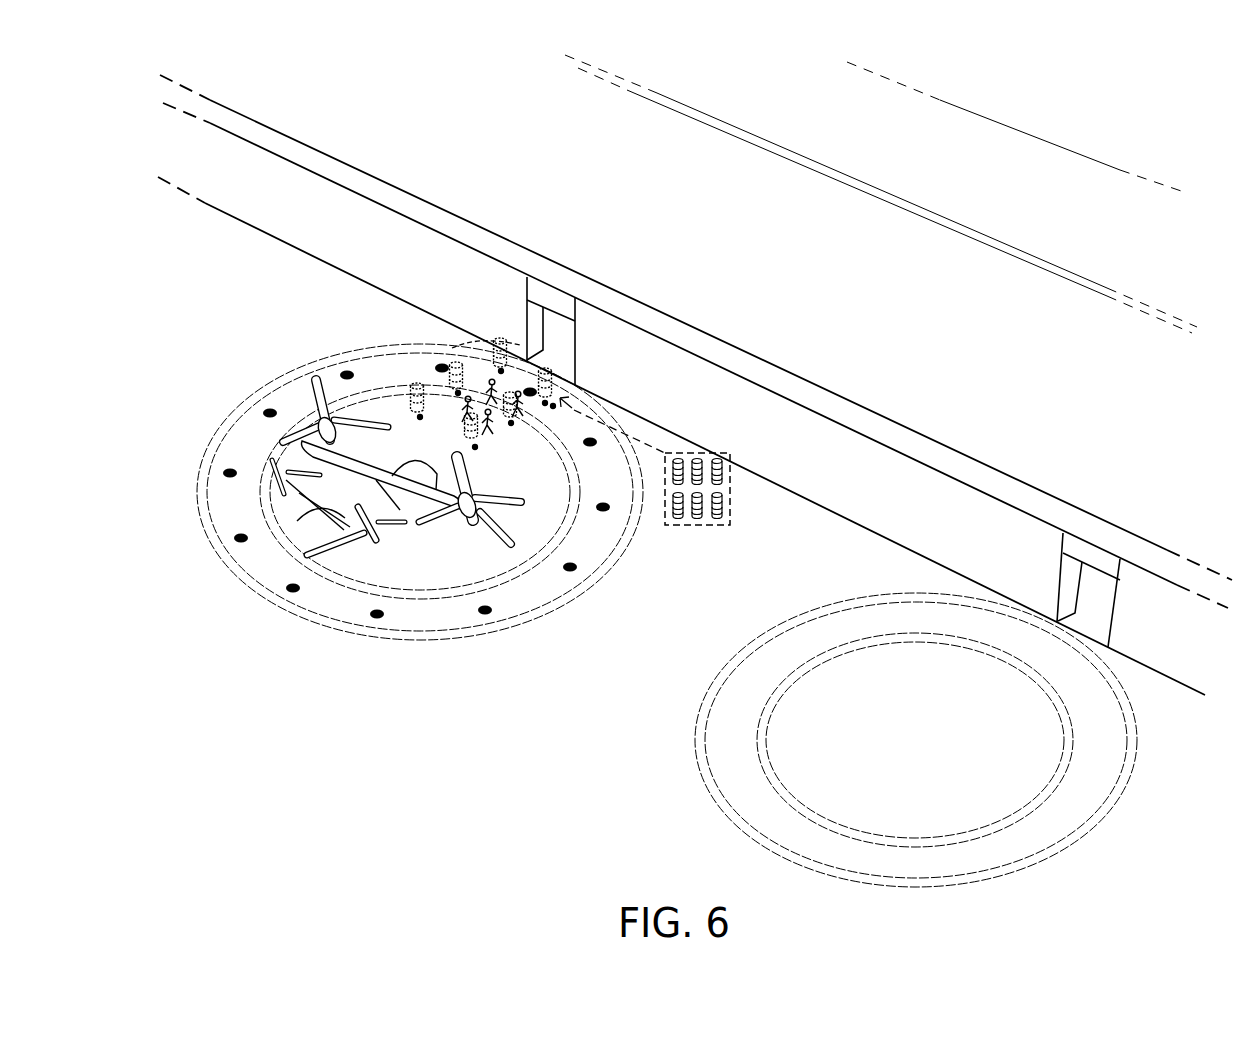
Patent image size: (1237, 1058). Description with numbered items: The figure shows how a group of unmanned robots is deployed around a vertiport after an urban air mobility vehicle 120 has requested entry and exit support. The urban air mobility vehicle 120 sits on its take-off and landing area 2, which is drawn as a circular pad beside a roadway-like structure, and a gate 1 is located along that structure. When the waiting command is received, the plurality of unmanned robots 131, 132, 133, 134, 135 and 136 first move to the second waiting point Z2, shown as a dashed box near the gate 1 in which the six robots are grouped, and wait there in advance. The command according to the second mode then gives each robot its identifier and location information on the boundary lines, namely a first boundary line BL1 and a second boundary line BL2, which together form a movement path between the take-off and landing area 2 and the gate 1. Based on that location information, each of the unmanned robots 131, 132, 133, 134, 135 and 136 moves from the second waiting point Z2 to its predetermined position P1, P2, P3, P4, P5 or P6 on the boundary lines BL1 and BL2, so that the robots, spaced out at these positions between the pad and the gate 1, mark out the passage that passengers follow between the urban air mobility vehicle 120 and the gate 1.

The gate 1 is at (544, 368).
The take-off and landing area 2 is at (199, 496).
The urban air mobility vehicle 120 is at (278, 543).
The unmanned robot 131 is at (548, 398).
The unmanned robot 132 is at (580, 408).
The unmanned robot 133 is at (548, 405).
The unmanned robot 134 is at (499, 338).
The unmanned robot 135 is at (452, 365).
The unmanned robot 136 is at (410, 383).
The predetermined position P1 is at (550, 402).
The predetermined position P2 is at (553, 406).
The predetermined position P3 is at (511, 426).
The predetermined position P4 is at (459, 392).
The predetermined position P5 is at (419, 415).
The predetermined position P6 is at (472, 447).
The first boundary line BL1 is at (459, 390).
The second boundary line BL2 is at (580, 408).
The second waiting point Z2 is at (730, 503).